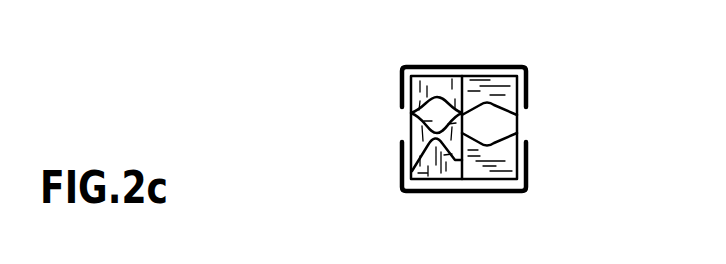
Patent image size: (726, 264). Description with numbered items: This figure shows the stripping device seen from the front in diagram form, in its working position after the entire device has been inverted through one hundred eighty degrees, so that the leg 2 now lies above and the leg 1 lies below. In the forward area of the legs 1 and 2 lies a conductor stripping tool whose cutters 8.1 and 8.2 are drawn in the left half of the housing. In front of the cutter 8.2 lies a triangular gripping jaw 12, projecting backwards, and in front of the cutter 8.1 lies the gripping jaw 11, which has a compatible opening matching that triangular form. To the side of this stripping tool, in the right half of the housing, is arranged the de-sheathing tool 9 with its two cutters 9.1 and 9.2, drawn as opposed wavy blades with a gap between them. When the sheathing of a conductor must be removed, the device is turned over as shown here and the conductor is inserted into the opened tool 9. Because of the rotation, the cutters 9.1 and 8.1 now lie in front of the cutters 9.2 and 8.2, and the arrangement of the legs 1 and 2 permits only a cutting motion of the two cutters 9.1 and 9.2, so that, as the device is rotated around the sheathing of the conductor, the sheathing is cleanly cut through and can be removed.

The leg 1 is at (487, 192).
The leg 2 is at (437, 63).
The cutter 8.1 is at (413, 150).
The cutter 8.2 is at (417, 110).
The de-sheathing tool 9 is at (528, 125).
The cutter 9.1 is at (503, 158).
The cutter 9.2 is at (504, 97).
The gripping jaw 11 is at (420, 172).
The gripping jaw 12 is at (418, 84).